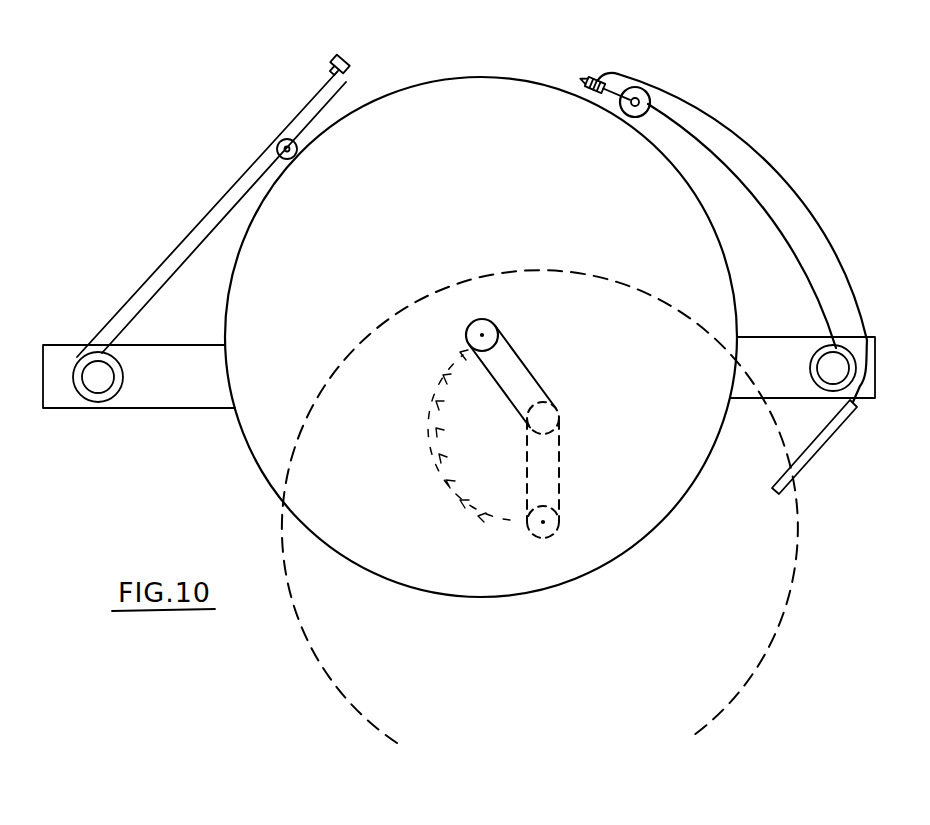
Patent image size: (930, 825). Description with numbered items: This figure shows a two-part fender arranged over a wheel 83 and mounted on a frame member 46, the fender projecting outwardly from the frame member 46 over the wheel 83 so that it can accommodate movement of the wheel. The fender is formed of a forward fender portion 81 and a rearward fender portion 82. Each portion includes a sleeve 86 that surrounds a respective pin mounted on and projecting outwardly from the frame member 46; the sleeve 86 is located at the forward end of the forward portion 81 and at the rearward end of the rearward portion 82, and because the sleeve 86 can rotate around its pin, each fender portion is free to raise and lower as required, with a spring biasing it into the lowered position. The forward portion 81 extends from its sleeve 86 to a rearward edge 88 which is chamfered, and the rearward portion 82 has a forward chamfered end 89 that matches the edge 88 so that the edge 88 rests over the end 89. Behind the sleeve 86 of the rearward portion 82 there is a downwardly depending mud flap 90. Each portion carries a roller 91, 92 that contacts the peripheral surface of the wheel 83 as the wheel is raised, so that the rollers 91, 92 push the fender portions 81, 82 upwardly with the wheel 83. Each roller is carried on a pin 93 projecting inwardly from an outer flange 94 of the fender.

The frame member 46 is at (140, 408).
The forward fender portion 81 is at (182, 248).
The rearward fender portion 82 is at (757, 155).
The wheel 83 is at (456, 77).
The sleeve 86 is at (75, 366).
The rearward edge 88 is at (346, 82).
The forward chamfered end 89 is at (612, 73).
The mud flap 90 is at (808, 464).
The roller 91 is at (264, 158).
The roller 92 is at (655, 90).
The pin 93 is at (622, 115).
The outer flange 94 is at (130, 305).